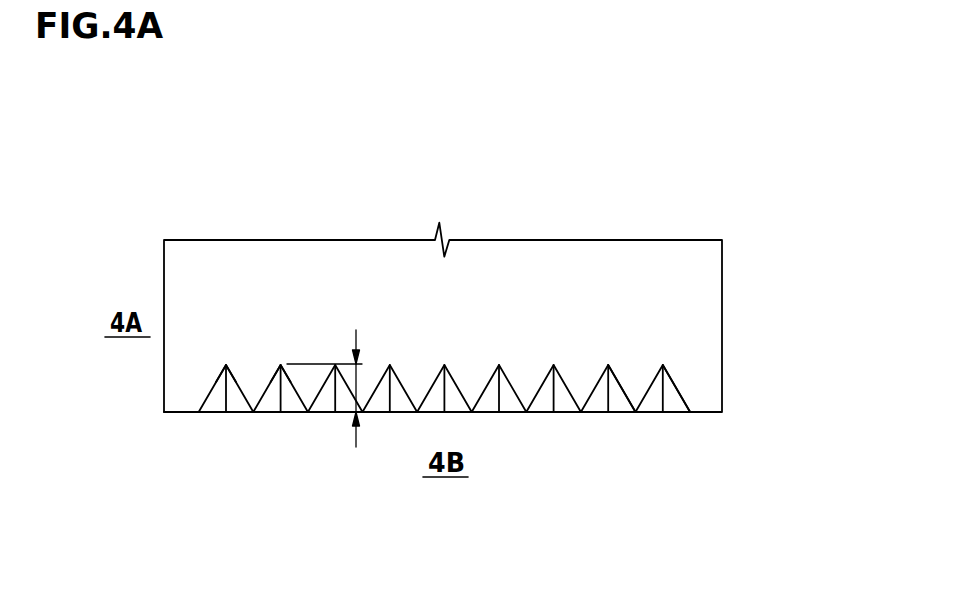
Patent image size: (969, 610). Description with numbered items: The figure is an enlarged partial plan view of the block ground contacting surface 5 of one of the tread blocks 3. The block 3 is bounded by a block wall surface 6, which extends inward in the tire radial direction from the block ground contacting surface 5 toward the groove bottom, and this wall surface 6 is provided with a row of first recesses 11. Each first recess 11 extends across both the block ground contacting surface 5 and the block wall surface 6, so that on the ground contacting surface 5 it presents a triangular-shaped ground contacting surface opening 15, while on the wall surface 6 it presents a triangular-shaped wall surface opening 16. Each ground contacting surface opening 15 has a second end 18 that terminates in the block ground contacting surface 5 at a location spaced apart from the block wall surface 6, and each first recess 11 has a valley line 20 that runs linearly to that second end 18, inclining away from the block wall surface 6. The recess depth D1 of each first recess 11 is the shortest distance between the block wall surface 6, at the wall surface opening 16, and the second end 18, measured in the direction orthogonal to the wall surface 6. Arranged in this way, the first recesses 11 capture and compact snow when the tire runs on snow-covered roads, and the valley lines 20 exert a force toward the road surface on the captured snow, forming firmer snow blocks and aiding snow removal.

The block 3 is at (231, 209).
The block ground contacting surface 5 is at (575, 290).
The block wall surface 6 is at (182, 413).
The first recess 11 is at (615, 400).
The ground contacting surface opening 15 is at (618, 360).
The wall surface opening 16 is at (295, 413).
The second end 18 is at (226, 365).
The valley line 20 is at (223, 404).
The recess depth D1 is at (357, 388).